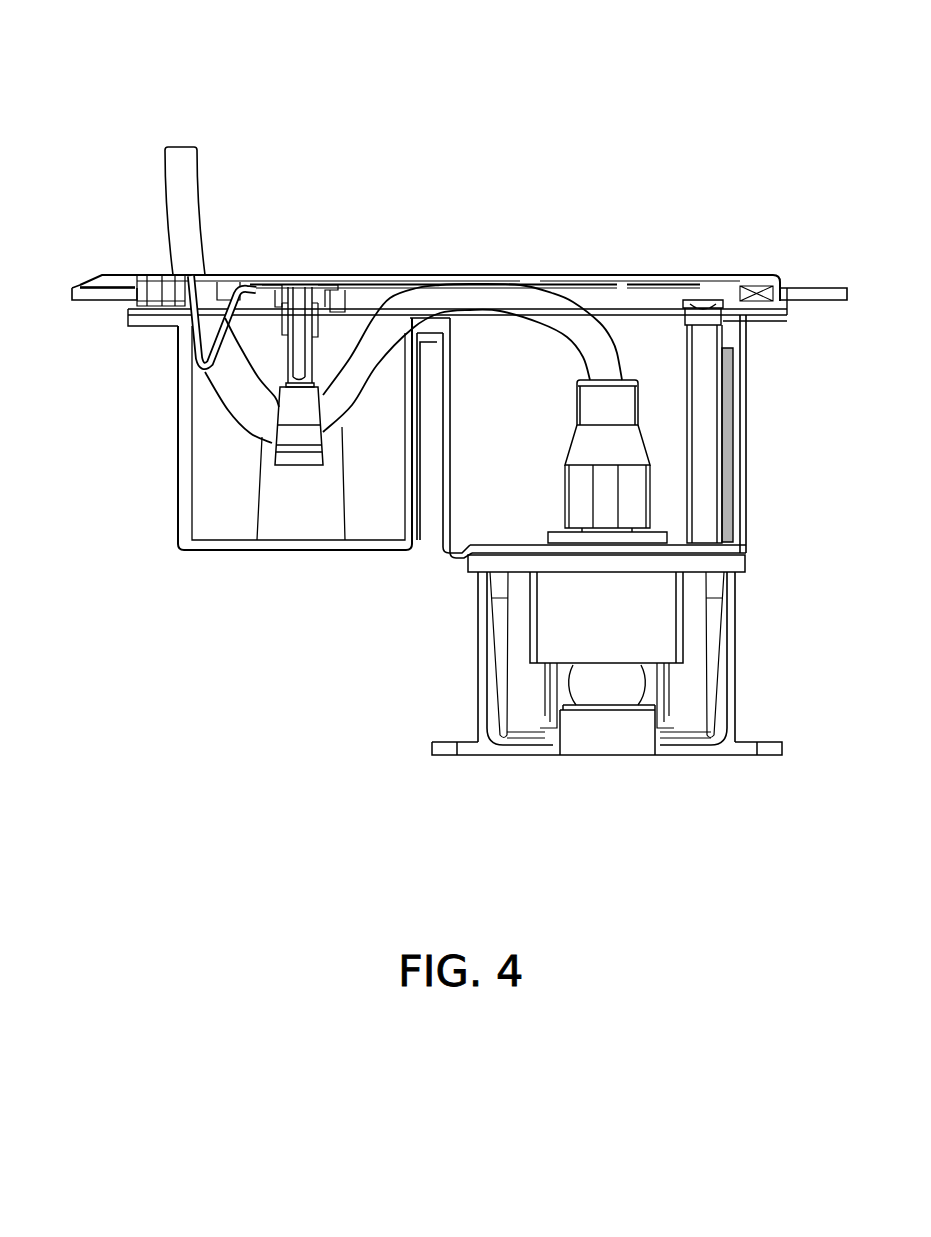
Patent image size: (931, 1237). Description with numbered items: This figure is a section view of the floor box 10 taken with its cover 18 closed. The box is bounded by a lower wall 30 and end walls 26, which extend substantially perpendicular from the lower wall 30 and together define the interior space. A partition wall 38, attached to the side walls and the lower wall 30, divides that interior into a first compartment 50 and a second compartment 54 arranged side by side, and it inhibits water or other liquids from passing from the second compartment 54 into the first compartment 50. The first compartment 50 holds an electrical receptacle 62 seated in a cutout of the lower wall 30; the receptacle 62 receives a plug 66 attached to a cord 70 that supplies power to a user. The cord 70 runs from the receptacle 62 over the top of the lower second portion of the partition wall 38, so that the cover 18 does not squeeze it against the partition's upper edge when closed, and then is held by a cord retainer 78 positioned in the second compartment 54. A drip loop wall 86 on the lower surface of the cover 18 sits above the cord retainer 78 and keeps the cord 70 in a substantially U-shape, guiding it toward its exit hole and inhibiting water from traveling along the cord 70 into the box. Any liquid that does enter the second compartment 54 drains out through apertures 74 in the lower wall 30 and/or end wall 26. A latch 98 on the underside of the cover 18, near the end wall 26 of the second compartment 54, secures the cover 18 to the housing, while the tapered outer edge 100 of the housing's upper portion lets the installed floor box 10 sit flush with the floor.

The floor box 10 is at (105, 60).
The cover 18 is at (690, 278).
The end wall 26 is at (196, 482).
The lower wall 30 is at (373, 548).
The partition wall 38 is at (440, 372).
The first compartment 50 is at (650, 347).
The second compartment 54 is at (340, 336).
The receptacle 62 is at (618, 616).
The plug 66 is at (618, 454).
The cord 70 is at (493, 298).
The apertures 74 is at (260, 546).
The cord retainer 78 is at (300, 455).
The drip loop wall 86 is at (290, 345).
The latch 98 is at (190, 345).
The outer edge 100 is at (100, 278).